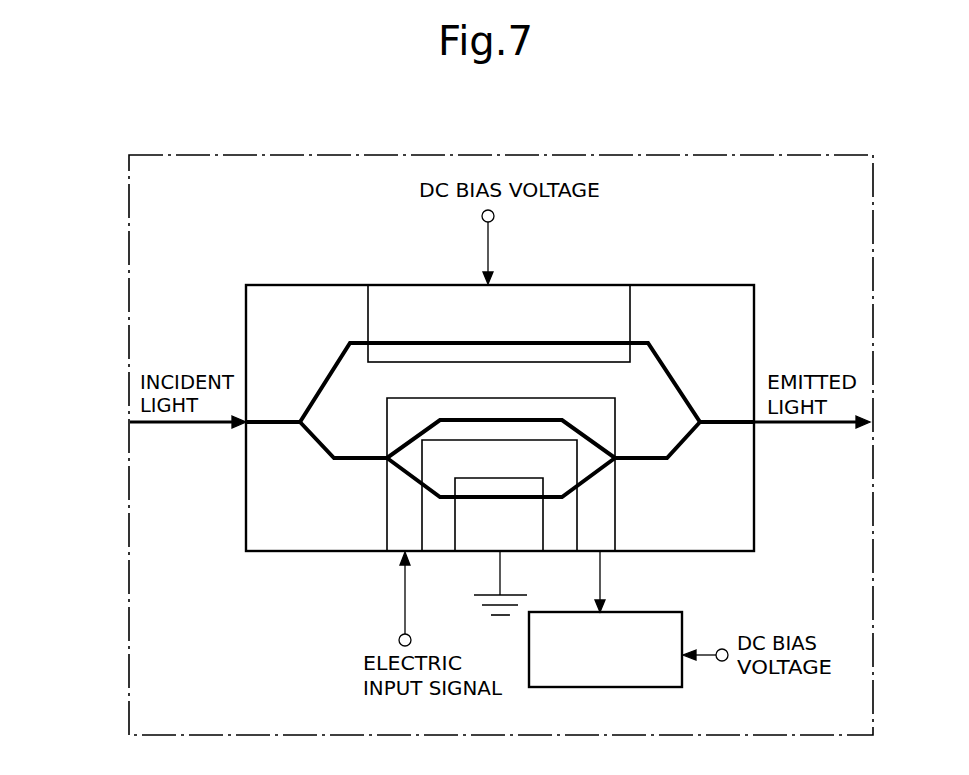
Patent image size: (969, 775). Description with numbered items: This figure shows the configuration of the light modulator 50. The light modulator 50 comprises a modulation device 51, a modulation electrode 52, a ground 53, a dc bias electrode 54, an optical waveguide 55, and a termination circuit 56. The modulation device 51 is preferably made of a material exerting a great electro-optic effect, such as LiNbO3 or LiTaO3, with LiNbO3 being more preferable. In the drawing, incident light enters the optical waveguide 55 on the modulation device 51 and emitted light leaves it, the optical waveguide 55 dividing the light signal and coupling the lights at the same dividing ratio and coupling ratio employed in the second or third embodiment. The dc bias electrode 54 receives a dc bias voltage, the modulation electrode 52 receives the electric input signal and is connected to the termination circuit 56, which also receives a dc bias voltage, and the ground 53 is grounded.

The light modulator 50 is at (128, 240).
The modulation device 51 is at (277, 553).
The modulation electrode 52 is at (400, 523).
The ground 53 is at (535, 523).
The dc bias electrode 54 is at (597, 290).
The optical waveguide 55 is at (665, 361).
The termination circuit 56 is at (683, 613).